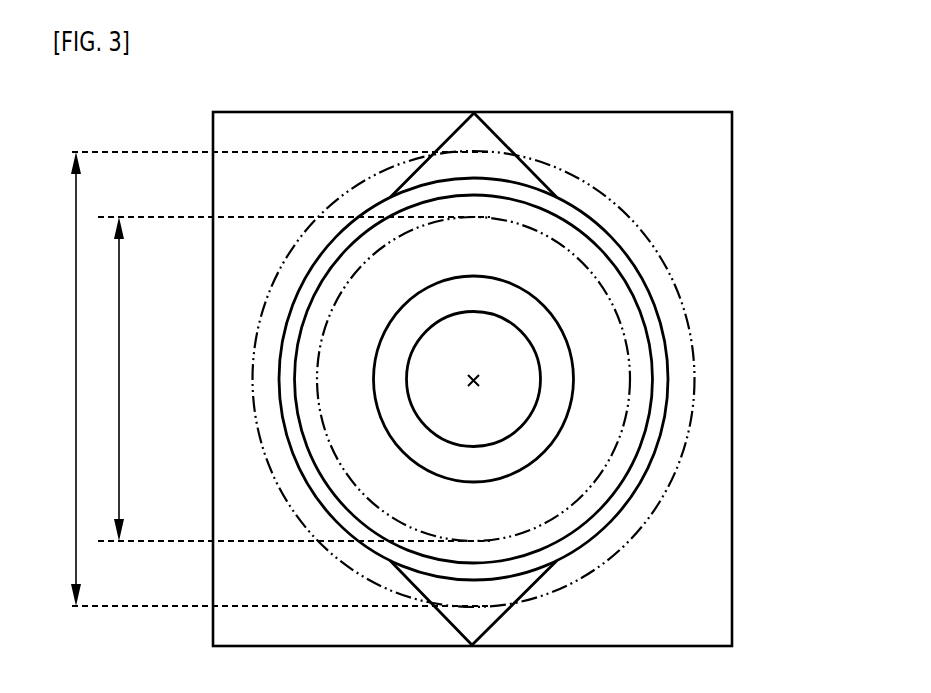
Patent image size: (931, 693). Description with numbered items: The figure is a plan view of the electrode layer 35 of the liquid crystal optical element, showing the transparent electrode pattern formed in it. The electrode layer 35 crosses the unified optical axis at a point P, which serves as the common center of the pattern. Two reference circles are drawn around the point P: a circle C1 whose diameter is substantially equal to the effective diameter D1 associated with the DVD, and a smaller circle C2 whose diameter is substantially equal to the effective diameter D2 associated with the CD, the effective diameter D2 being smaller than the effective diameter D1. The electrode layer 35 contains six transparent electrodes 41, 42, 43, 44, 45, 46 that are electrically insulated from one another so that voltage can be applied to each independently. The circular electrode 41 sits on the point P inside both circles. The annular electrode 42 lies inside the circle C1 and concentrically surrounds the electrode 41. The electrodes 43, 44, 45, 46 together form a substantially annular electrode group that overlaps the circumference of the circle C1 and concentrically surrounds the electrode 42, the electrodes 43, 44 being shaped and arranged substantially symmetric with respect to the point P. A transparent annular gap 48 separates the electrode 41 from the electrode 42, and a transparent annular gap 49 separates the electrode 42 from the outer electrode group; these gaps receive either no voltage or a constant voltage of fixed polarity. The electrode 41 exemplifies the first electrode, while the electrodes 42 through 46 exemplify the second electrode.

The electrode layer 35 is at (733, 113).
The electrode 41 is at (430, 392).
The electrode 42 is at (375, 288).
The electrode 43 is at (725, 187).
The electrode 44 is at (223, 583).
The electrode 45 is at (475, 128).
The electrode 46 is at (476, 622).
The annular gap 48 is at (538, 320).
The annular gap 49 is at (660, 328).
The circle C1 is at (670, 480).
The circle C2 is at (626, 416).
The effective diameter D1 is at (271, 379).
The effective diameter D2 is at (291, 379).
The point P is at (474, 396).